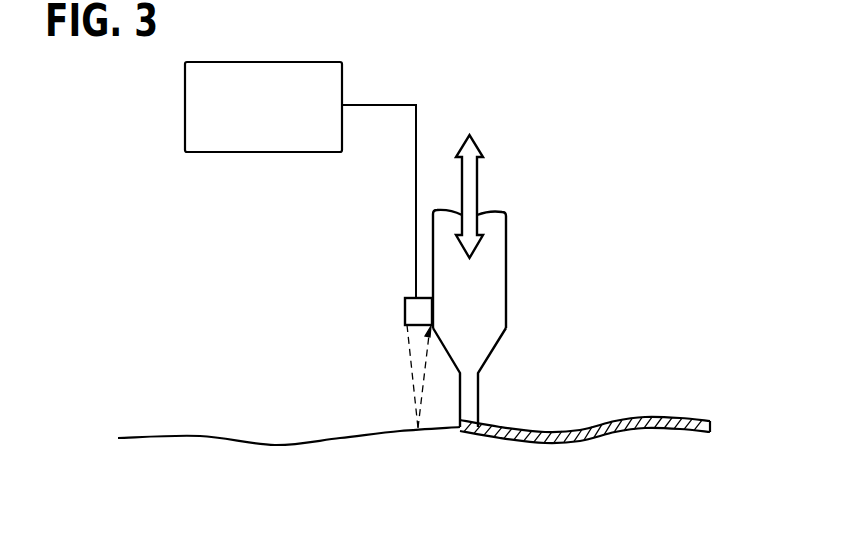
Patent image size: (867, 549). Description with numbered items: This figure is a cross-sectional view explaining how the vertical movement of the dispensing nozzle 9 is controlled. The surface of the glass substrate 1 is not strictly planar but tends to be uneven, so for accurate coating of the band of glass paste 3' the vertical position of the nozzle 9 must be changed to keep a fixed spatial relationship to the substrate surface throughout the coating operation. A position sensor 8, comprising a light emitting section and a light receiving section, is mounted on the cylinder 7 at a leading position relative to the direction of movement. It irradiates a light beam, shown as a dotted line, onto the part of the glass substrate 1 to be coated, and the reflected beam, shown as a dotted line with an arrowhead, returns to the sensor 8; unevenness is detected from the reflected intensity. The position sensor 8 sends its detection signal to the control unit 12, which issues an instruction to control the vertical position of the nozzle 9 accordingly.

The control unit 12 is at (292, 61).
The cylinder 7 is at (507, 252).
The nozzle 9 is at (479, 397).
The position sensor 8 is at (413, 313).
The glass substrate 1 is at (272, 458).
The glass paste 3' is at (573, 464).